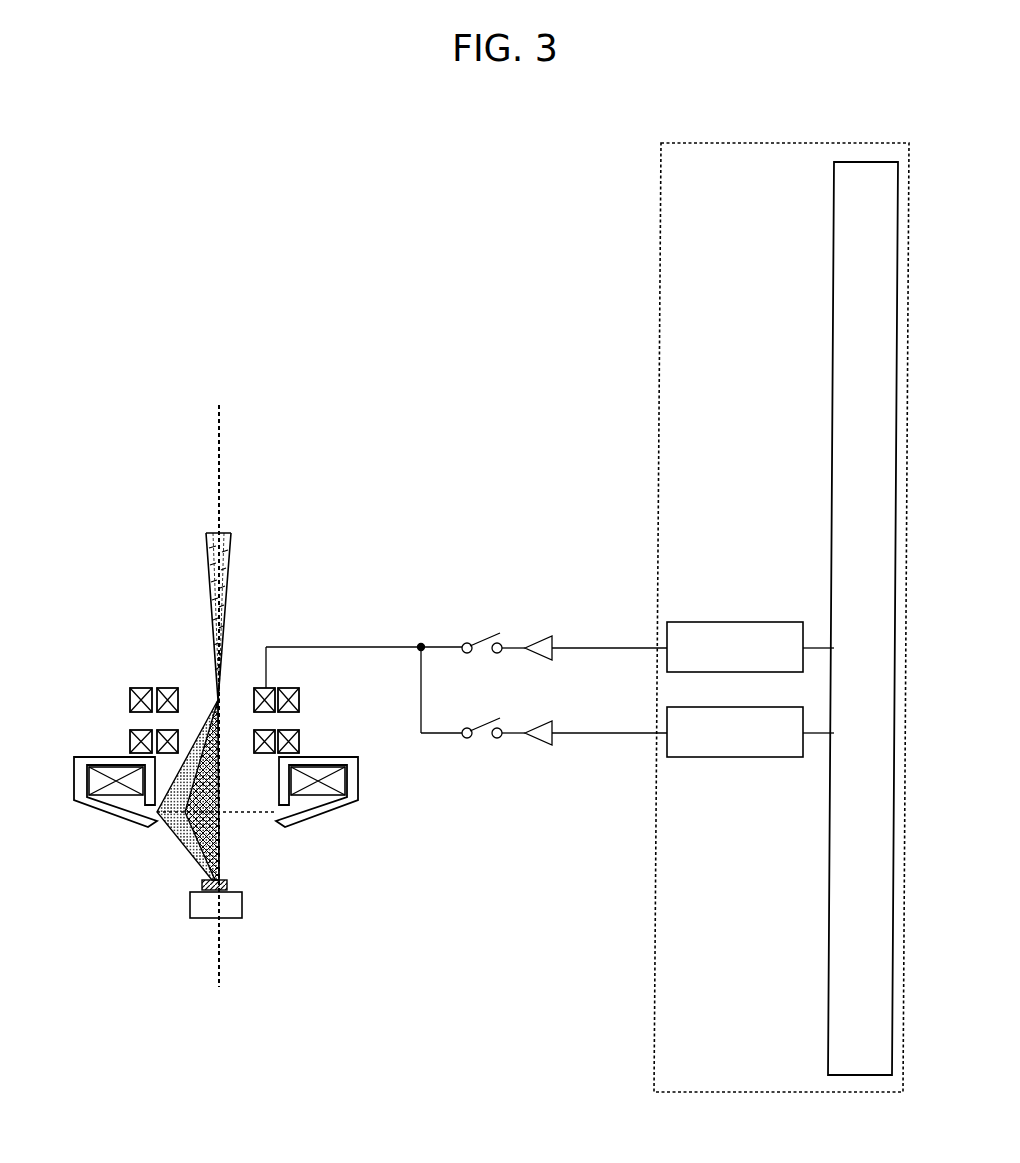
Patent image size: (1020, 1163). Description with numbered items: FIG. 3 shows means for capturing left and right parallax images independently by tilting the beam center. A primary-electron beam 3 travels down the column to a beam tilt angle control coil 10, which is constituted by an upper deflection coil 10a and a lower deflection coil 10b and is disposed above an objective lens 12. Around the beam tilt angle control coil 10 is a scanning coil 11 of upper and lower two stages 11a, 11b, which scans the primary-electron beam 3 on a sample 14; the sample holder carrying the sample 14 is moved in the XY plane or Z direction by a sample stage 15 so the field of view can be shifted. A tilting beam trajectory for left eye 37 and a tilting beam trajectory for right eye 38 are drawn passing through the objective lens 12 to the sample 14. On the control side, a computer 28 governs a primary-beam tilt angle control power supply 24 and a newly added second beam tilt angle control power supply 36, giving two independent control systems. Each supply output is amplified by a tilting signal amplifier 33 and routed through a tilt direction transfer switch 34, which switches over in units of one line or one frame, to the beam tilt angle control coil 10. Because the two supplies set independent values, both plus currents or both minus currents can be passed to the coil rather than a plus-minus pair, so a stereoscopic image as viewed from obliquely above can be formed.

The primary-electron beam 3 is at (228, 562).
The beam tilt angle control coil 10 is at (134, 689).
The upper deflection coil 10a is at (168, 687).
The lower deflection coil 10b is at (170, 730).
The scanning coil 11 is at (322, 702).
The upper stage of scanning coil 11a is at (300, 698).
The lower stage of scanning coil 11b is at (300, 740).
The objective lens 12 is at (108, 763).
The sample 14 is at (227, 883).
The sample stage 15 is at (188, 903).
The primary-beam tilt angle control power supply 24 is at (732, 622).
The computer 28 is at (868, 162).
The tilting signal amplifier 33 is at (540, 637).
The tilt direction transfer switch 34 is at (482, 633).
The second beam tilt angle control power supply 36 is at (732, 757).
The tilting beam trajectory for left eye 37 is at (182, 838).
The tilting beam trajectory for right eye 38 is at (212, 827).